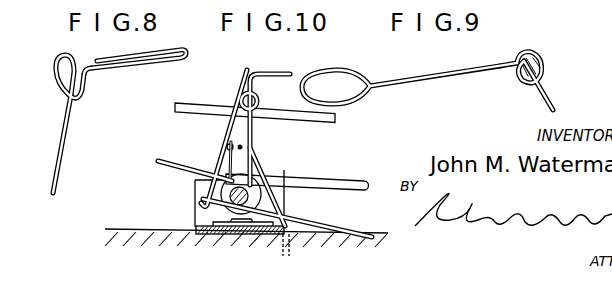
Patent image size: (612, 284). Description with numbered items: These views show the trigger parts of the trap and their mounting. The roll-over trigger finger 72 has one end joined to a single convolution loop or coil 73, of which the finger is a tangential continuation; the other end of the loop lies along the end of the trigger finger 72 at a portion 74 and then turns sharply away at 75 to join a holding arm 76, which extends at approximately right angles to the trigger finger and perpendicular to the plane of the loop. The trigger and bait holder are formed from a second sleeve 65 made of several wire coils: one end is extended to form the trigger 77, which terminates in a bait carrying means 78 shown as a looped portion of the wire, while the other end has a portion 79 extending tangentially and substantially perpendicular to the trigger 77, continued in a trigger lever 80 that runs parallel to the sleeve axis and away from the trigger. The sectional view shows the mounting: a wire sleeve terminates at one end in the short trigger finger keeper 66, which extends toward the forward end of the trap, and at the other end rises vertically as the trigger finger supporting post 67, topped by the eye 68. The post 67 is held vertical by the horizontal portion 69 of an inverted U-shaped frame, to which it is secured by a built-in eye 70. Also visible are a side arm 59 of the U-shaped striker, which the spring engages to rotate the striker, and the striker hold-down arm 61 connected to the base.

In FIG. 10, the side arm 59 is at (344, 177).
In FIG. 10, the striker hold-down arm 61 is at (199, 105).
In FIG. 9, the second sleeve 65 is at (545, 68).
In FIG. 10, the trigger finger keeper 66 is at (200, 199).
In FIG. 10, the trigger finger supporting post 67 is at (252, 130).
In FIG. 10, the eye 68 is at (259, 100).
In FIG. 10, the horizontal portion 69 is at (256, 153).
In FIG. 10, the built-in eye 70 is at (253, 152).
In FIG. 8, the trigger finger 72 is at (58, 136).
In FIG. 8, the single convolution loop 73 is at (53, 71).
In FIG. 10, the single convolution loop 73 is at (246, 74).
In FIG. 8, the portion lying along trigger finger end 74 is at (84, 90).
In FIG. 8, the sharp turn 75 is at (83, 67).
In FIG. 8, the holding arm 76 is at (157, 51).
In FIG. 10, the trigger 77 is at (184, 172).
In FIG. 9, the trigger 77 is at (446, 76).
In FIG. 9, the bait carrying means 78 is at (343, 70).
In FIG. 10, the tangential portion 79 is at (228, 160).
In FIG. 9, the tangential portion 79 is at (518, 66).
In FIG. 10, the trigger lever 80 is at (222, 147).
In FIG. 9, the trigger lever 80 is at (556, 102).